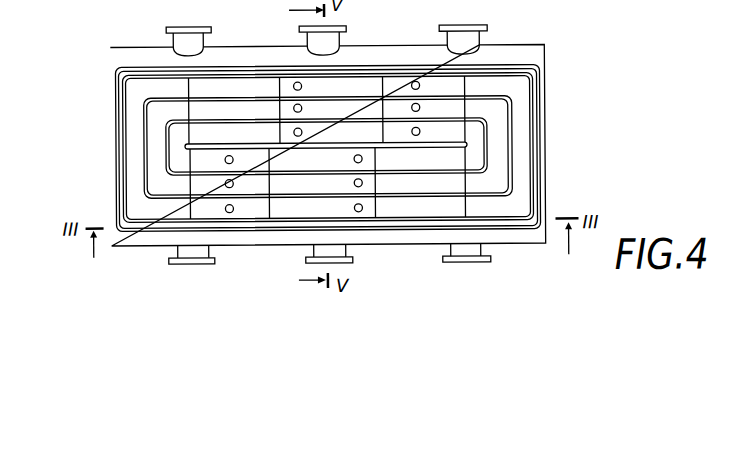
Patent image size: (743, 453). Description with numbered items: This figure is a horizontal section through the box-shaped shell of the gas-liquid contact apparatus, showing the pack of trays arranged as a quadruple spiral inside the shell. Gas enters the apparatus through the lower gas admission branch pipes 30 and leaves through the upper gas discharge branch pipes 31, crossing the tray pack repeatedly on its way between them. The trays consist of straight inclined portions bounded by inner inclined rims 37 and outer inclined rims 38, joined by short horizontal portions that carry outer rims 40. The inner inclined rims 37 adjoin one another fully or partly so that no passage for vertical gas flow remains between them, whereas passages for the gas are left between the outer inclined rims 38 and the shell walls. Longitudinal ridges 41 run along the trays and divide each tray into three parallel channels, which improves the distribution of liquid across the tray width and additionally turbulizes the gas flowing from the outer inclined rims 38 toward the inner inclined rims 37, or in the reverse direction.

The lower gas admission branch pipes 30 is at (442, 258).
The upper gas discharge branch pipes 31 is at (300, 30).
The inner inclined rims 37 is at (308, 150).
The outer inclined rims 38 is at (370, 72).
The outer rims 40 is at (541, 108).
The longitudinal ridges 41 is at (485, 213).